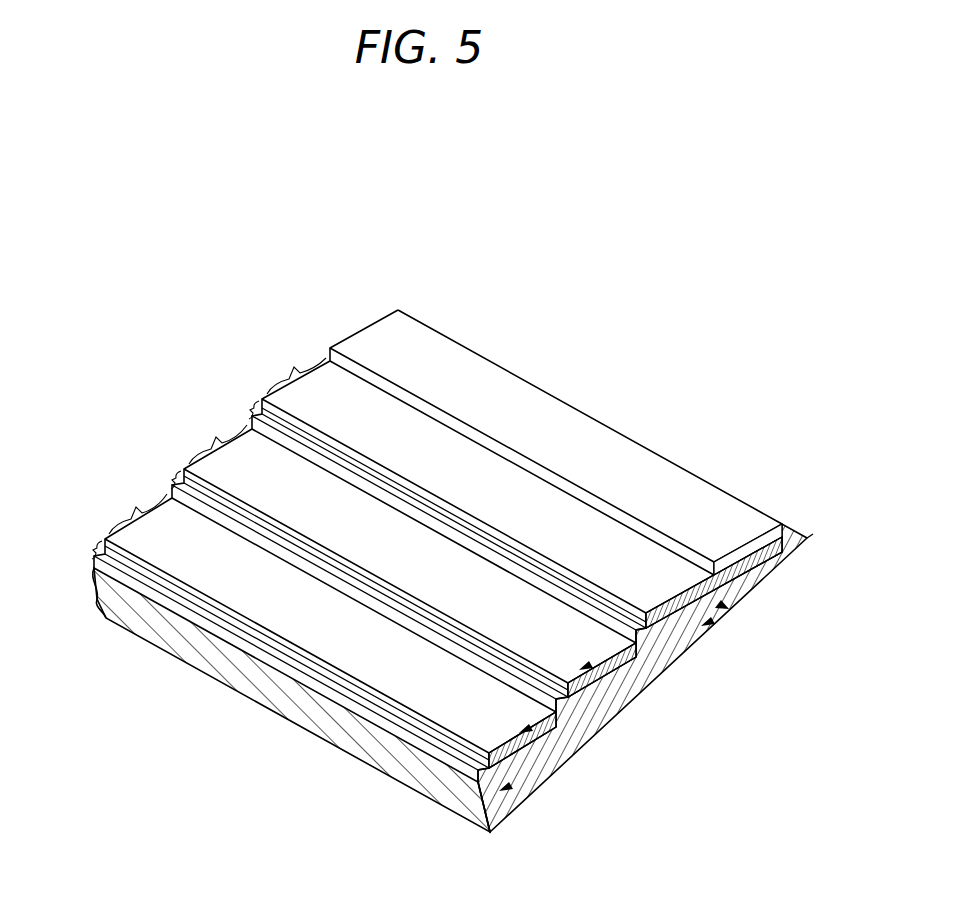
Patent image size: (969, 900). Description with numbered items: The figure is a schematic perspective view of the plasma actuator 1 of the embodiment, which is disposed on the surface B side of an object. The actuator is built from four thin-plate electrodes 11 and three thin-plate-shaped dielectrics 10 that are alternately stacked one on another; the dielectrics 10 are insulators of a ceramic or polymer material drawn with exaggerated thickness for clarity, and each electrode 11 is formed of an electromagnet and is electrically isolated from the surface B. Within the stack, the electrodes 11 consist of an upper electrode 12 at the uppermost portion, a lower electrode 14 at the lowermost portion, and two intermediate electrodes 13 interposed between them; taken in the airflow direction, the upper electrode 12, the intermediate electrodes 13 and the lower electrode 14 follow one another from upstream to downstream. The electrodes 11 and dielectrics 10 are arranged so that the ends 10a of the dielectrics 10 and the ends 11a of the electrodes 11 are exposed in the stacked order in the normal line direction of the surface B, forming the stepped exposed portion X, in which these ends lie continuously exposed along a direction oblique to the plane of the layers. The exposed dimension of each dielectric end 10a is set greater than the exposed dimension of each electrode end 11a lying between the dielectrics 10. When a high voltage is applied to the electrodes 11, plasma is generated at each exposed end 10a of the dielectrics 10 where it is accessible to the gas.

The plasma actuator 1 is at (453, 516).
The dielectric 10 is at (390, 564).
The end of dielectric 10a is at (494, 500).
The electrode 11 is at (363, 286).
The end of electrode 11a is at (400, 486).
The upper electrode 12 is at (636, 442).
The intermediate electrode 13 is at (716, 624).
The lower electrode 14 is at (505, 812).
The stepped exposed portion X is at (220, 380).
The surface of the object B is at (88, 550).